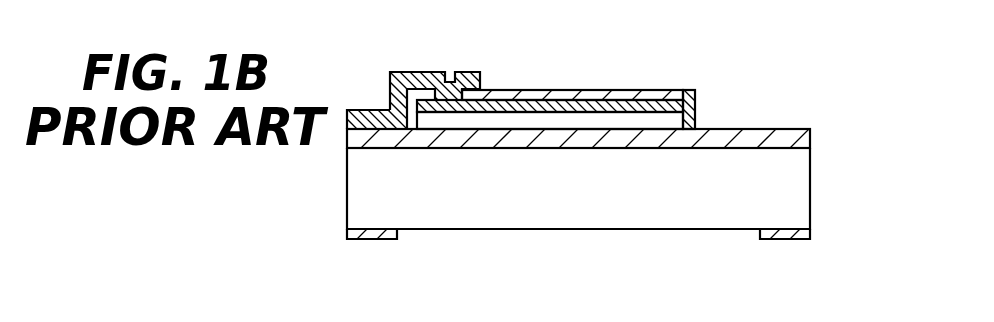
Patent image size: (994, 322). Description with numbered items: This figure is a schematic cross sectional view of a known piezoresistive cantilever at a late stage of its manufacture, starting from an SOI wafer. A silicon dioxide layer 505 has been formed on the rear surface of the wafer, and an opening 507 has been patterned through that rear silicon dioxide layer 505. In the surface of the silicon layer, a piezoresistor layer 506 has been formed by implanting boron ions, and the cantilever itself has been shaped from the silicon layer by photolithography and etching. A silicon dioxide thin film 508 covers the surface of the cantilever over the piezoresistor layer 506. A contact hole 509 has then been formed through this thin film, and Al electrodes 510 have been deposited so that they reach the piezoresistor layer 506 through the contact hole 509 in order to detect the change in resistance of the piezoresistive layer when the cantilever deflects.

The silicon dioxide layer 505 is at (812, 233).
The piezoresistor layer 506 is at (535, 89).
The opening 507 is at (583, 231).
The silicon dioxide thin film 508 is at (685, 90).
The contact hole 509 is at (450, 72).
The Al electrodes 510 is at (361, 110).